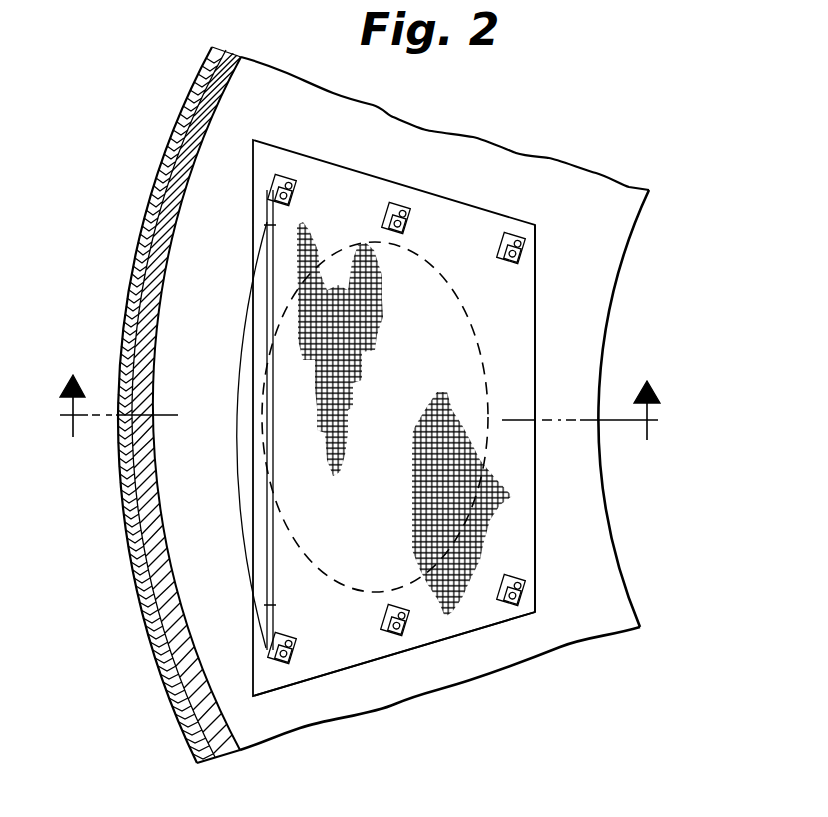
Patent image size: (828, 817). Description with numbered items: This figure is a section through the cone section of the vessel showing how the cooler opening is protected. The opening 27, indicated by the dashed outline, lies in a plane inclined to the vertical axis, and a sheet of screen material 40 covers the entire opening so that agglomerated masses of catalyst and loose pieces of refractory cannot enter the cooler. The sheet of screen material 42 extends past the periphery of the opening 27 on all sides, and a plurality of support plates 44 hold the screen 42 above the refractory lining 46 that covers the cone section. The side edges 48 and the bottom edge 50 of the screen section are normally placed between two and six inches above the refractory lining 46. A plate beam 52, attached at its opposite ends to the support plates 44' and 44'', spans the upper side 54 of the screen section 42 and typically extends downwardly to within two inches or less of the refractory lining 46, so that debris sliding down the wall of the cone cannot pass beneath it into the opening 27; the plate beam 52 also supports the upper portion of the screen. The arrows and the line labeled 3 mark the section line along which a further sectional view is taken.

The section line 3- 3 is at (360, 390).
The opening 27 is at (479, 303).
The sheet of screen material 40 is at (390, 437).
The sheet of screen material 42 is at (453, 230).
The support plates 44 is at (453, 437).
The support plate 44' is at (301, 161).
The support plate 44'' is at (306, 674).
The refractory lining 46 is at (225, 733).
The side edges 48 is at (400, 653).
The bottom edge 50 is at (536, 440).
The plate beam 52 is at (247, 373).
The upper side 54 is at (254, 222).